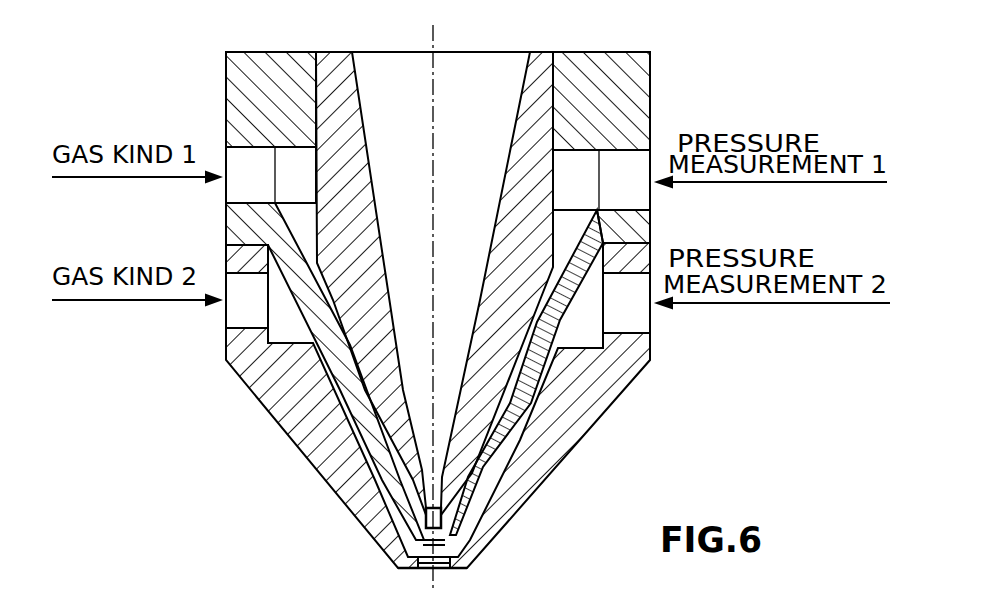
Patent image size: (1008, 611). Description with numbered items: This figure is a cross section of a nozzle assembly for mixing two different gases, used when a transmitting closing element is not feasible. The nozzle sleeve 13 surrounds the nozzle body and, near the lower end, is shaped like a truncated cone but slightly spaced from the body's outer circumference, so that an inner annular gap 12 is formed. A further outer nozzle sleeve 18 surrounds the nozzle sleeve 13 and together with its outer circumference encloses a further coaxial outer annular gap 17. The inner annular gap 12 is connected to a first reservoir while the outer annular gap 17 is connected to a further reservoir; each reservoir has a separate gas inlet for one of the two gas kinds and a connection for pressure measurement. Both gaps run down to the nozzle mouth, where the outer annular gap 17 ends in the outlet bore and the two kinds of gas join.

The nozzle sleeve 13 is at (507, 400).
The annular gap 12 is at (473, 468).
The outer annular gap 17 is at (325, 387).
The outer nozzle sleeve 18 is at (325, 437).